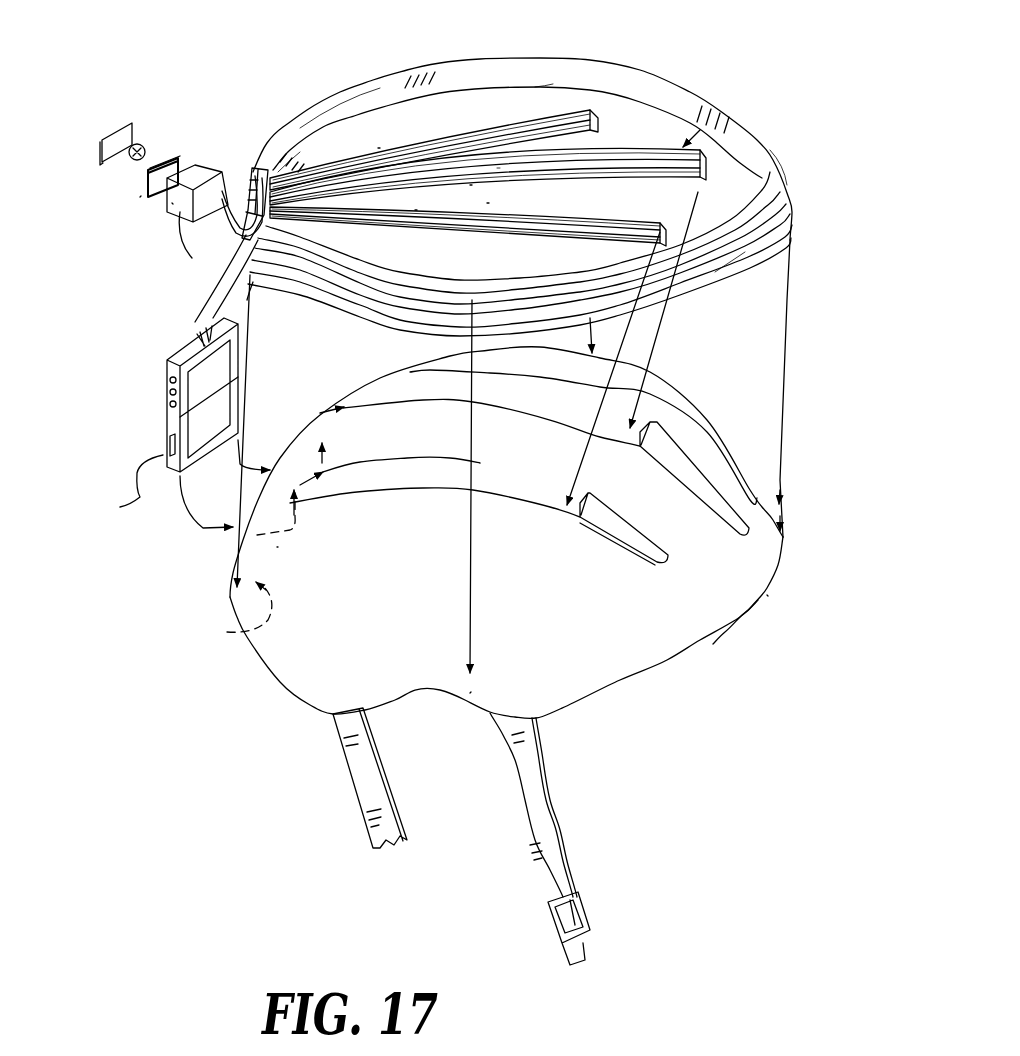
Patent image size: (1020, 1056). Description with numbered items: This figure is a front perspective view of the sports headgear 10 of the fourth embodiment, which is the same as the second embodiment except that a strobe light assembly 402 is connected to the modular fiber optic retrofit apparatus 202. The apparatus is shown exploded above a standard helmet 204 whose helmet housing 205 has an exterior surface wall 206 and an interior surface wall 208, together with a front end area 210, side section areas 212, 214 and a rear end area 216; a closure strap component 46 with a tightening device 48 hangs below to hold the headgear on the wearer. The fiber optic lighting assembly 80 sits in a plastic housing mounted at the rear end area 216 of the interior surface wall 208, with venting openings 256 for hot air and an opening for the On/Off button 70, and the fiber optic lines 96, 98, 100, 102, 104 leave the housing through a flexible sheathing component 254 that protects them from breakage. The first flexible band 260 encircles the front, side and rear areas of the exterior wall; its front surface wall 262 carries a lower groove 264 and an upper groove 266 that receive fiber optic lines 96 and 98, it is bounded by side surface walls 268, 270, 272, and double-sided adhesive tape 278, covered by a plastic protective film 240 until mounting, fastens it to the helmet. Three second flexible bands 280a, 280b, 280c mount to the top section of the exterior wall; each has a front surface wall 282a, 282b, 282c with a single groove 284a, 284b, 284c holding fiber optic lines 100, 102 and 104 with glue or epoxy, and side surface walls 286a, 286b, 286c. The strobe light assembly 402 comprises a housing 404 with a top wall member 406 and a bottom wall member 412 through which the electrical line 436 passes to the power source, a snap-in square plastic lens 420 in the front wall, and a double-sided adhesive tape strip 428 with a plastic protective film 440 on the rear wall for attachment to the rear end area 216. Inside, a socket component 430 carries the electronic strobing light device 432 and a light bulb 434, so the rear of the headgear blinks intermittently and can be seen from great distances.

The sports headgear 10 is at (820, 86).
The closure strap component 46 is at (360, 755).
The tightening device 48 is at (580, 898).
The On/Off button 70 is at (123, 487).
The fiber optic lighting assembly 80 is at (162, 390).
The fiber optic line 96 is at (776, 202).
The fiber optic line 98 is at (785, 170).
The fiber optic line 100 is at (497, 213).
The fiber optic line 102 is at (497, 167).
The fiber optic line 104 is at (535, 85).
The modular fiber optic retrofit apparatus 202 is at (617, 56).
The standard helmet 204 is at (388, 571).
The helmet housing 205 is at (767, 595).
The exterior surface wall 206 is at (676, 613).
The interior surface wall 208 is at (232, 631).
The front end area 210 is at (737, 552).
The side section area 212 is at (470, 693).
The side section area 214 is at (673, 383).
The rear end area 216 is at (277, 547).
The plastic protective film 240 is at (318, 127).
The flexible sheathing component 254 is at (205, 312).
The venting openings 256 is at (160, 403).
The first flexible band 260 is at (492, 72).
The front surface wall 262 is at (715, 272).
The lower groove 264 is at (783, 181).
The upper groove 266 is at (778, 228).
The side surface wall 268 is at (778, 255).
The side surface wall 270 is at (680, 84).
The side surface wall 272 is at (253, 282).
The double-sided adhesive tape 278 is at (318, 156).
The second flexible band 280a is at (610, 247).
The second flexible band 280b is at (488, 176).
The second flexible band 280c is at (600, 114).
The front surface wall 282a is at (623, 230).
The front surface wall 282b is at (602, 160).
The front surface wall 282c is at (575, 107).
The groove 284a is at (540, 213).
The groove 284b is at (548, 166).
The groove 284c is at (455, 135).
The side surface wall 286a is at (417, 208).
The side surface wall 286b is at (472, 185).
The side surface wall 286c is at (378, 148).
The strobe light assembly 402 is at (140, 197).
The housing 404 is at (216, 169).
The top wall member 406 is at (187, 178).
The bottom wall member 412 is at (172, 203).
The snap-in square plastic lens 420 is at (113, 125).
The double-sided adhesive tape strip 428 is at (282, 166).
The socket component 430 is at (160, 153).
The electronic strobing light device 432 is at (167, 152).
The light bulb 434 is at (140, 160).
The electrical line 436 is at (192, 258).
The plastic protective film 440 is at (250, 170).